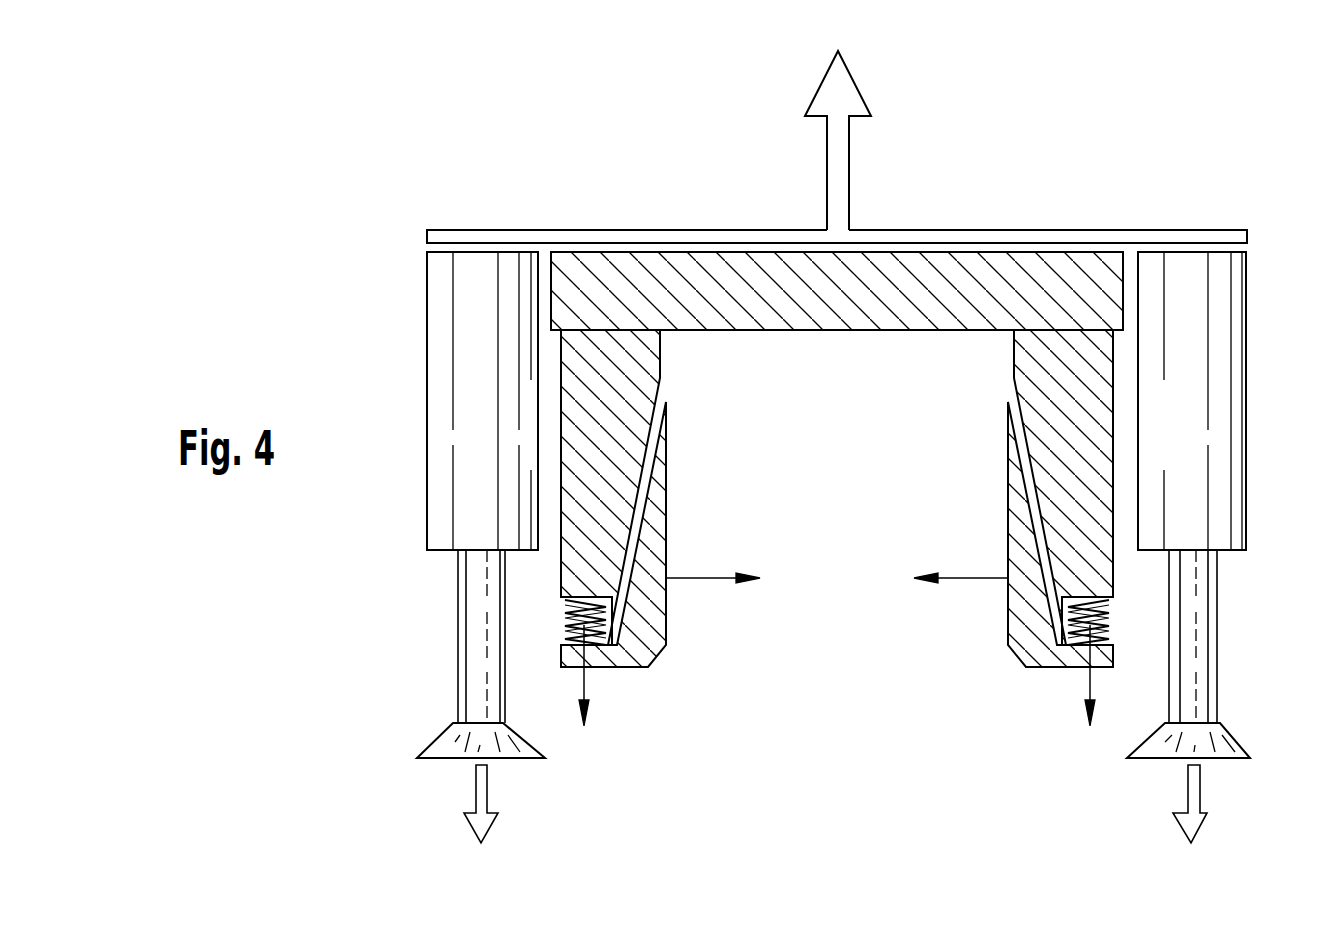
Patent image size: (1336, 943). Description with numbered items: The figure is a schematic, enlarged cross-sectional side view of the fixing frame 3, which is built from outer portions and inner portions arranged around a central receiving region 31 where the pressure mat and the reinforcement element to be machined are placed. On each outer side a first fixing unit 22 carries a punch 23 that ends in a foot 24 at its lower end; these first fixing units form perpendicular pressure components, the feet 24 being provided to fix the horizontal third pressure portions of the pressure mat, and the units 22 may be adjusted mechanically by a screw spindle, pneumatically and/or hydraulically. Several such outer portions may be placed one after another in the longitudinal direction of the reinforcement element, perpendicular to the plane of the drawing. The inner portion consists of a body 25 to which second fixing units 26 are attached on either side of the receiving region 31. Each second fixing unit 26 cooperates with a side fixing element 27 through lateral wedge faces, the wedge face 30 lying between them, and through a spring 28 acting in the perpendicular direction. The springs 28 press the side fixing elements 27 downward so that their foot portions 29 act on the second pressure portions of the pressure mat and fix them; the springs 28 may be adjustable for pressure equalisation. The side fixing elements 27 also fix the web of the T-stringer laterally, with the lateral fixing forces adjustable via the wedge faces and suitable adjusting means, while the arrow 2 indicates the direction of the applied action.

The ejection direction arrow 2 is at (836, 184).
The fixing frame 3 is at (1160, 137).
The first fixing unit 22 is at (488, 386).
The punch 23 is at (478, 630).
The foot 24 is at (467, 755).
The body 25 is at (830, 290).
The second fixing unit 26 is at (620, 354).
The side fixing element 27 is at (640, 625).
The spring 28 is at (568, 630).
The foot portion 29 is at (633, 672).
The wedge surface 30 is at (667, 512).
The receiving region 31 is at (840, 700).